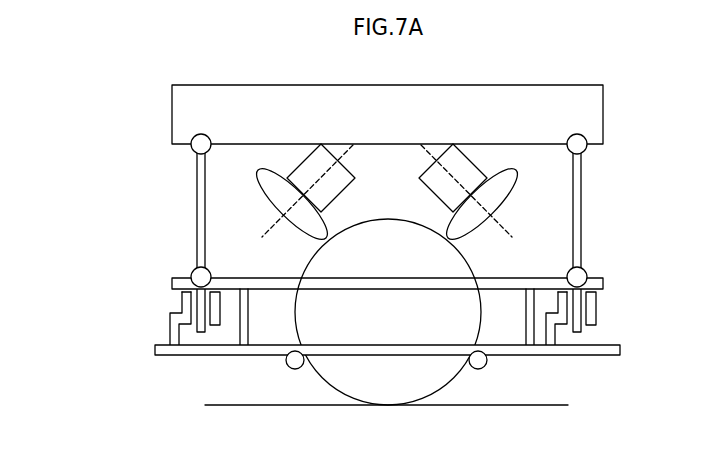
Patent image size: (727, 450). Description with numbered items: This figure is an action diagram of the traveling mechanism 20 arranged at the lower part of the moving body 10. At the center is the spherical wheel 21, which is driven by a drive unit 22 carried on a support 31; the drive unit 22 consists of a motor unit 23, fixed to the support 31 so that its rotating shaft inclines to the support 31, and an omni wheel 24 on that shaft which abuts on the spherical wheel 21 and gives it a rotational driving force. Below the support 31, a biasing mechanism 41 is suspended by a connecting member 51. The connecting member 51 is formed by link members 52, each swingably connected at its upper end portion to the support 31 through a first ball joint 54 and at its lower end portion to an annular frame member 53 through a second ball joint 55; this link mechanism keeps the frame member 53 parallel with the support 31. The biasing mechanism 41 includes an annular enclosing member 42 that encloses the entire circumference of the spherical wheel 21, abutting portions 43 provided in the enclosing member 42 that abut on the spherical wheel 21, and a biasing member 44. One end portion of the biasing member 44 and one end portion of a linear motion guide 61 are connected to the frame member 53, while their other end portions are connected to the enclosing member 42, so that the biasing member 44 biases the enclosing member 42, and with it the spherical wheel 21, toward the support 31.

The moving body 10 is at (88, 89).
The traveling mechanism 20 is at (127, 128).
The spherical wheel 21 is at (455, 385).
The drive unit 22 is at (291, 161).
The motor unit 23 is at (470, 172).
The omni wheel 24 is at (517, 178).
The support 31 is at (600, 111).
The biasing mechanism 41 is at (516, 285).
The enclosing member 42 is at (517, 357).
The abutting portion 43 is at (297, 370).
The biasing member 44 is at (249, 318).
The connecting member 51 is at (583, 175).
The link member 52 is at (585, 196).
The frame member 53 is at (537, 279).
The first ball joint 54 is at (588, 142).
The second ball joint 55 is at (588, 266).
The linear motion guide 61 is at (598, 303).